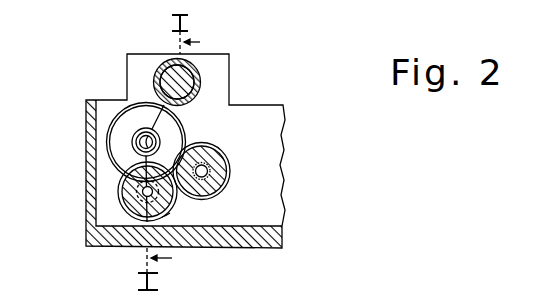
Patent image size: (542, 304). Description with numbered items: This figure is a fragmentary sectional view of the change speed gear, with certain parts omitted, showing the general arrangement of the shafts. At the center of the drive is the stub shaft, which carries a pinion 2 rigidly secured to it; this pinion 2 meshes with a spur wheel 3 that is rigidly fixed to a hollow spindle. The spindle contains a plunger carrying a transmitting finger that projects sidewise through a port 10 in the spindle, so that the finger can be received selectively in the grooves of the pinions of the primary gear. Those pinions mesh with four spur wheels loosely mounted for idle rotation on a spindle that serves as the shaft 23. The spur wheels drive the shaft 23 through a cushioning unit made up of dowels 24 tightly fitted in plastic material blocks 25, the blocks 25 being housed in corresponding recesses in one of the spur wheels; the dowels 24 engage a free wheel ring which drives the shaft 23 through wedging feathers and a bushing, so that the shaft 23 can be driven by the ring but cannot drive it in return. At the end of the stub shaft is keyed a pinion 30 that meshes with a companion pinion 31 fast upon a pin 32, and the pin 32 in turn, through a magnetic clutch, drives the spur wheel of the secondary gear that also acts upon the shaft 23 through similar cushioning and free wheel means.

The pinion 2 is at (176, 215).
The spur wheel 3 is at (172, 129).
The port 10 is at (185, 179).
The shaft 23 is at (201, 82).
The dowels 24 is at (121, 300).
The plastic material blocks 25 is at (204, 300).
The pinion 30 is at (120, 204).
The companion pinion 31 is at (220, 193).
The pin 32 is at (208, 170).